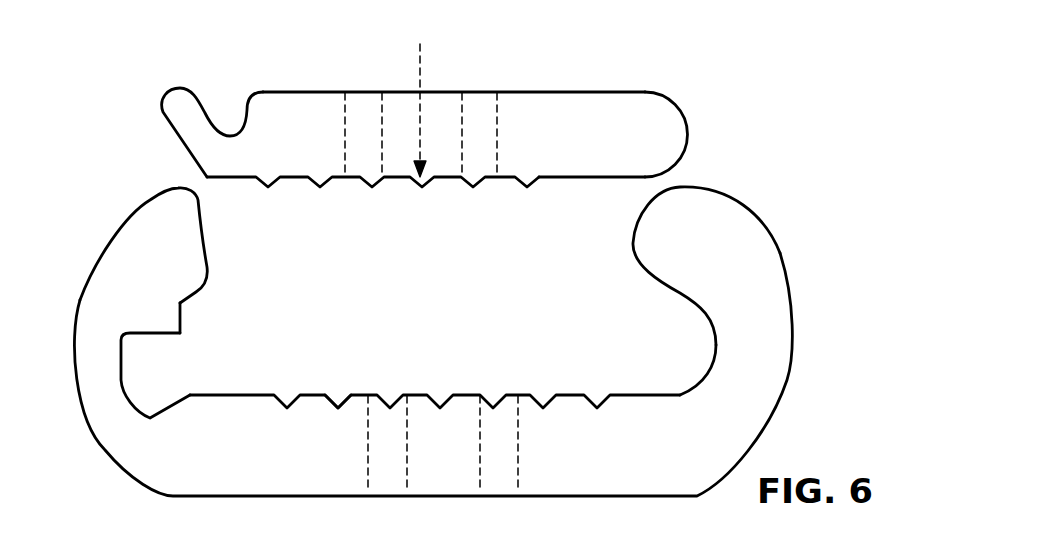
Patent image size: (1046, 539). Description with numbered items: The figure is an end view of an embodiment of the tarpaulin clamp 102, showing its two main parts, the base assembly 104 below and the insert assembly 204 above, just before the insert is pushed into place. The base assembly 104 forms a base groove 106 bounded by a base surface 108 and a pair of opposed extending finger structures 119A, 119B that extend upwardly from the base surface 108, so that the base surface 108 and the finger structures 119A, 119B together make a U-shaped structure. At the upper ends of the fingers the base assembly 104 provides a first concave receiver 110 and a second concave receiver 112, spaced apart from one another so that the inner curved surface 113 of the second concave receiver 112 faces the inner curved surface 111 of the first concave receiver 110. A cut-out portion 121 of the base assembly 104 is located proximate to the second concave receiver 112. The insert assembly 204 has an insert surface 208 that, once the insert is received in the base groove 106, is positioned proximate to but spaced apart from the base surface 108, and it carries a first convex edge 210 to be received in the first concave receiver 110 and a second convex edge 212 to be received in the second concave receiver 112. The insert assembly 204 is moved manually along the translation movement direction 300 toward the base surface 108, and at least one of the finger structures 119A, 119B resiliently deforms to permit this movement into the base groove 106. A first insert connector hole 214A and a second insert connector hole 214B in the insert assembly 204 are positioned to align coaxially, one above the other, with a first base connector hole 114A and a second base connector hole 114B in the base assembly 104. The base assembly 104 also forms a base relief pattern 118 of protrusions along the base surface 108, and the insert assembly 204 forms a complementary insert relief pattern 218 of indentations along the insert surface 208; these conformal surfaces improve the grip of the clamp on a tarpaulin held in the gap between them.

The tarpaulin clamp 102 is at (842, 163).
The base assembly 104 is at (723, 203).
The base groove 106 is at (528, 338).
The base surface 108 is at (467, 395).
The first concave receiver 110 is at (623, 308).
The inner curved surface 111 is at (717, 343).
The second concave receiver 112 is at (282, 304).
The inner curved surface 113 is at (182, 303).
The first base connector hole 114A is at (518, 463).
The second base connector hole 114B is at (407, 458).
The base relief pattern 118 is at (342, 403).
The opposed extending finger structure 119A is at (193, 281).
The opposed extending finger structure 119B is at (737, 270).
The cut-out portion 121 is at (180, 387).
The insert assembly 204 is at (563, 92).
The insert surface 208 is at (295, 180).
The first convex edge 210 is at (687, 140).
The second convex edge 212 is at (163, 98).
The first insert connector hole 214A is at (498, 118).
The second insert connector hole 214B is at (380, 108).
The insert relief pattern 218 is at (578, 178).
The translation movement direction 300 is at (422, 47).